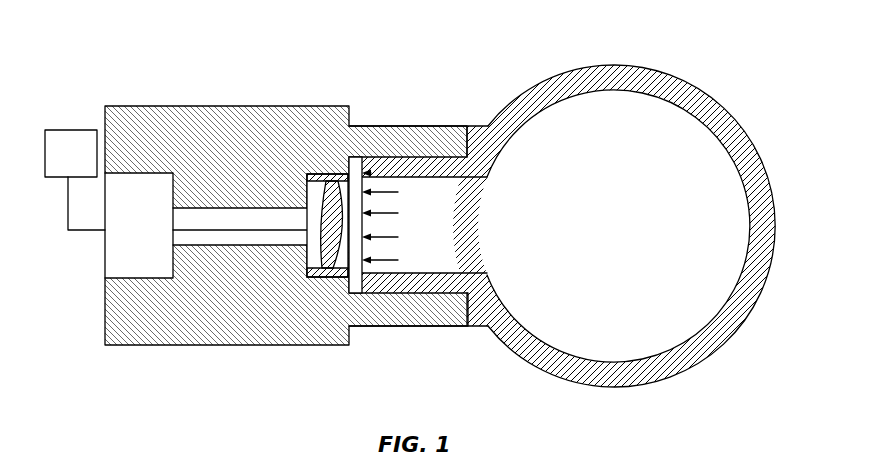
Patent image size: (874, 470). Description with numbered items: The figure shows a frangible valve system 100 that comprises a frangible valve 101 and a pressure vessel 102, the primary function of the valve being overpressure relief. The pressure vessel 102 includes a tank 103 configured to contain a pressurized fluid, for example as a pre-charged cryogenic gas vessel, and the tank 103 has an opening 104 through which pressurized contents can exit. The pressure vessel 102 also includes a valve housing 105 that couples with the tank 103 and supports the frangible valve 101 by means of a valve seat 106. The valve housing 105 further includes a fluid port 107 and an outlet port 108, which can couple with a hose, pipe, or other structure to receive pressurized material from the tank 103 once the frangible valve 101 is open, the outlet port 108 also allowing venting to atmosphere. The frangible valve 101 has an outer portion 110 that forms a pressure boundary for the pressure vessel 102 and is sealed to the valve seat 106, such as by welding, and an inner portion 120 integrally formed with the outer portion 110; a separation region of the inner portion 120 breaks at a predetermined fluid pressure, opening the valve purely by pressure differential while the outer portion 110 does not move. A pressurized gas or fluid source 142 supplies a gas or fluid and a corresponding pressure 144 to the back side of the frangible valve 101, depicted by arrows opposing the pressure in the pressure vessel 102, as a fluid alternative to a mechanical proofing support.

The frangible valve system 100 is at (185, 45).
The frangible valve 101 is at (297, 215).
The pressure vessel 102 is at (442, 75).
The tank 103 is at (692, 83).
The opening 104 is at (377, 225).
The valve housing 105 is at (237, 106).
The valve seat 106 is at (309, 184).
The fluid port 107 is at (166, 220).
The outlet port 108 is at (87, 261).
The outer portion 110 is at (367, 150).
The inner portion 120 is at (306, 261).
The pressurized gas or fluid source 142 is at (87, 163).
The pressure 144 is at (217, 232).